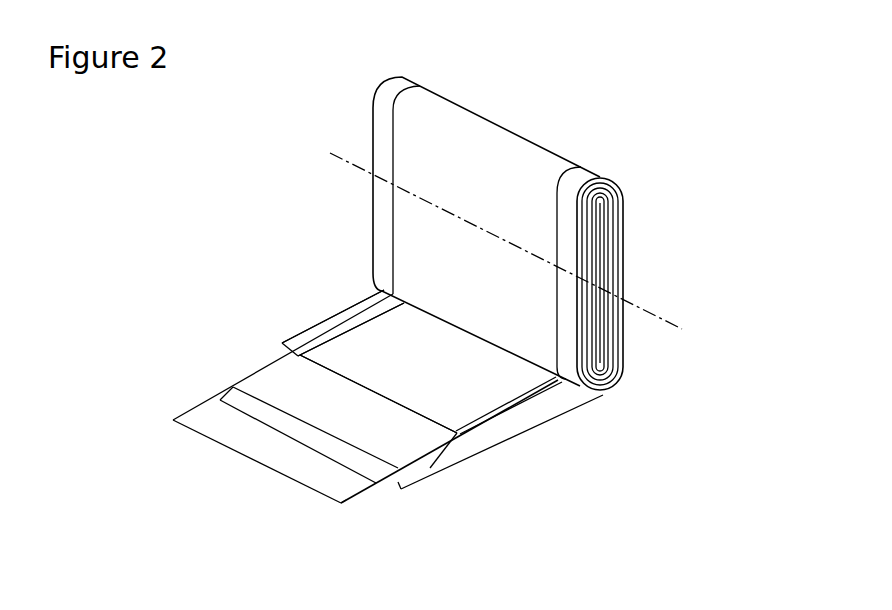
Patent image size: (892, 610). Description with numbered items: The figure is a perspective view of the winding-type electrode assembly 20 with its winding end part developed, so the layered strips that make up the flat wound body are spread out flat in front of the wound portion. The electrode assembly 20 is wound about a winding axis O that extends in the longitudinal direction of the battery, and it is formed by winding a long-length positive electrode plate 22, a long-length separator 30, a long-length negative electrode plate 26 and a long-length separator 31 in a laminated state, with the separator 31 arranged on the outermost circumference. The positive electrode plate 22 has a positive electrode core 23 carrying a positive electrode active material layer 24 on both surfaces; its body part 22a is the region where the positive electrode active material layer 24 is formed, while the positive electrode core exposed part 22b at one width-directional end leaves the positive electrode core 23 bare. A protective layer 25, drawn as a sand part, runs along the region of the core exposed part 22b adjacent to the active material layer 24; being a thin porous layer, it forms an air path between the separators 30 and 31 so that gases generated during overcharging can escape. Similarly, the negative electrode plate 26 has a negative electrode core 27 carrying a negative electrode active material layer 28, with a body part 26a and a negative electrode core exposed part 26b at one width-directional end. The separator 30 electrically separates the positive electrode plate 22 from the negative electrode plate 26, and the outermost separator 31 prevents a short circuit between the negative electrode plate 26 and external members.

The electrode assembly 20 is at (582, 80).
The positive electrode plate 22 is at (527, 392).
The body part 22a is at (378, 364).
The positive electrode core exposed part 22b is at (303, 326).
The positive electrode core 23 is at (342, 306).
The positive electrode active material layer 24 is at (540, 390).
The protective layer 25 is at (381, 298).
The negative electrode plate 26 is at (430, 468).
The body part 26a is at (322, 438).
The negative electrode core exposed part 26b is at (480, 442).
The negative electrode core 27 is at (400, 485).
The negative electrode active material layer 28 is at (284, 421).
The separator 30 is at (450, 440).
The separator 31 is at (343, 483).
The winding axis O is at (650, 307).